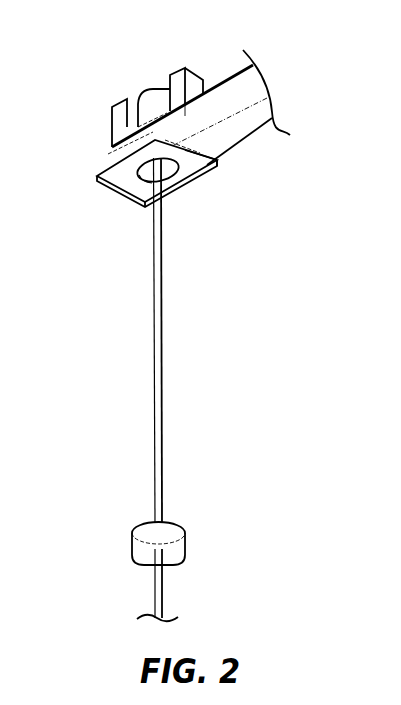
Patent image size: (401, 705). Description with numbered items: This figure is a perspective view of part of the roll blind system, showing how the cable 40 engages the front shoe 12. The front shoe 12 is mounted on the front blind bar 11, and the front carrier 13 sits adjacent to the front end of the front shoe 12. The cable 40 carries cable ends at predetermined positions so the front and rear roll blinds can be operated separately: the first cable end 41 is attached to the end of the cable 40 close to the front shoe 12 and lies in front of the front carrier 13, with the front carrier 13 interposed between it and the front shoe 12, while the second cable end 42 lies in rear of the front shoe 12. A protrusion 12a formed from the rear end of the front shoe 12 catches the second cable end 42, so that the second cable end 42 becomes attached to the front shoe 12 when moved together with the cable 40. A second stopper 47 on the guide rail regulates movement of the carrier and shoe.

The front blind bar 11 is at (232, 95).
The front shoe 12 is at (117, 154).
The protrusion 12a is at (129, 188).
The front carrier 13 is at (178, 87).
The first cable end 41 is at (144, 103).
The second stopper 47 is at (202, 151).
The cable 40 is at (158, 392).
The second cable end 42 is at (182, 533).